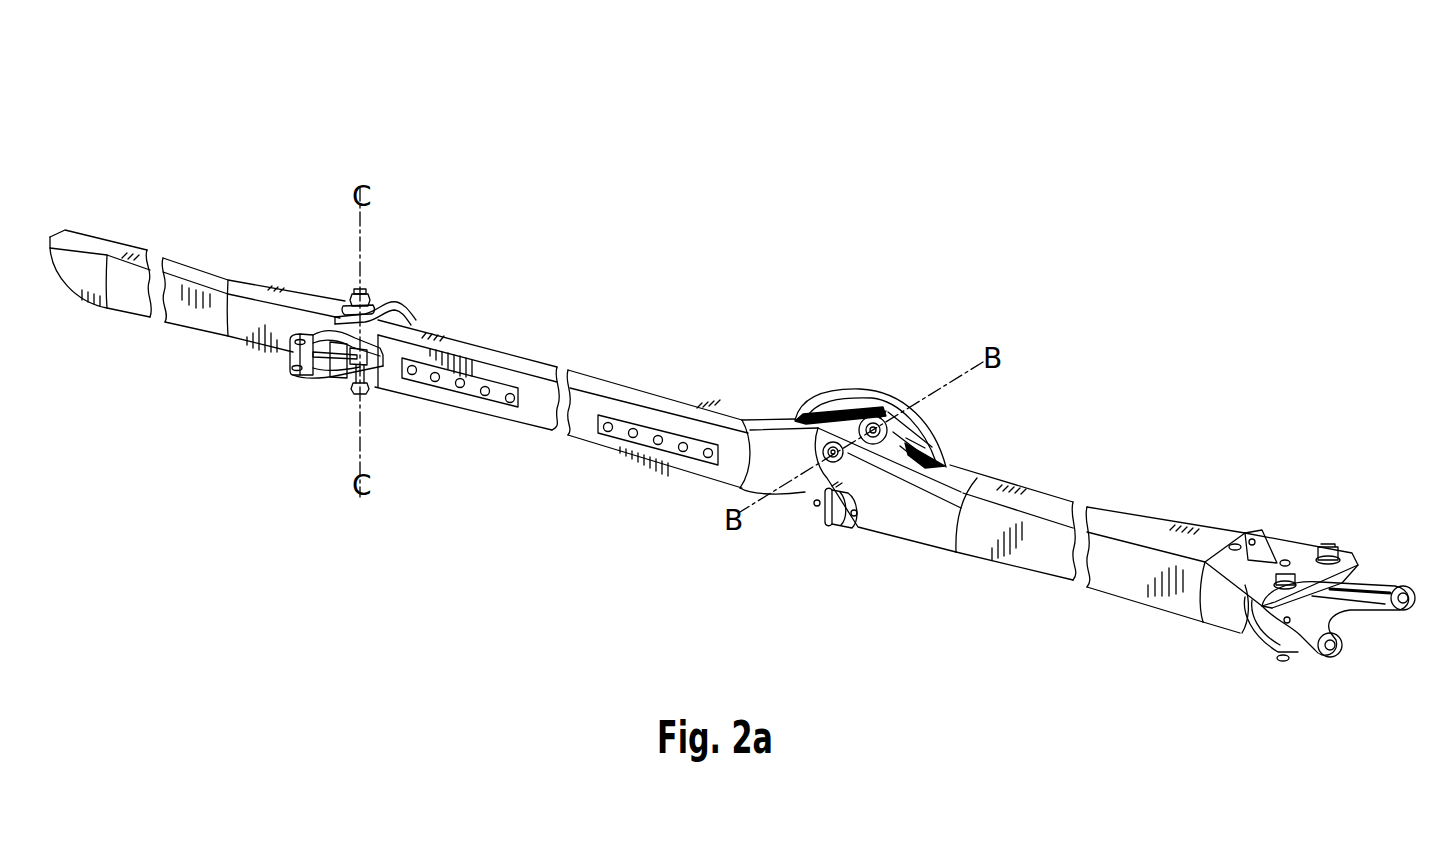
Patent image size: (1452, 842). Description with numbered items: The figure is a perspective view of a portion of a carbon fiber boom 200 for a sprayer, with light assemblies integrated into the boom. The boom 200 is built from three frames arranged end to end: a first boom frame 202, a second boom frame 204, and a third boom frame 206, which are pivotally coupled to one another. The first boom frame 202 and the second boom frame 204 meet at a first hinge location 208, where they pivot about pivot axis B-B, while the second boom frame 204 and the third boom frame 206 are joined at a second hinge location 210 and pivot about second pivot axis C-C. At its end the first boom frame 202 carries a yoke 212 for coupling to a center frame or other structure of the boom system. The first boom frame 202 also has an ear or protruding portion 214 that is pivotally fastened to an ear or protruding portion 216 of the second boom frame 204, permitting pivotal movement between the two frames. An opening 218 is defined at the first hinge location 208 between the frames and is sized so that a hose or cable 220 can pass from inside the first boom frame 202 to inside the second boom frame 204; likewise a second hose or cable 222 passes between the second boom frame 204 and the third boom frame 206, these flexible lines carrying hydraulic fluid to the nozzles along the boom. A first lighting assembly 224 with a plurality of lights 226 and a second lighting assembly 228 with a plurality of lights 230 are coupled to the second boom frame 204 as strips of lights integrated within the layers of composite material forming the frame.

The carbon fiber boom 200 is at (906, 158).
The first boom frame 202 is at (1135, 528).
The second boom frame 204 is at (660, 397).
The third boom frame 206 is at (97, 240).
The first hinge location 208 is at (895, 483).
The second hinge location 210 is at (307, 396).
The yoke 212 is at (1383, 586).
The protruding portion 214 is at (808, 470).
The protruding portion 216 is at (877, 418).
The opening 218 is at (918, 446).
The hose or cable 220 is at (806, 415).
The second hose or cable 222 is at (395, 302).
The first lighting assembly 224 is at (635, 496).
The lights 226 is at (631, 438).
The second lighting assembly 228 is at (461, 381).
The lights 230 is at (483, 395).